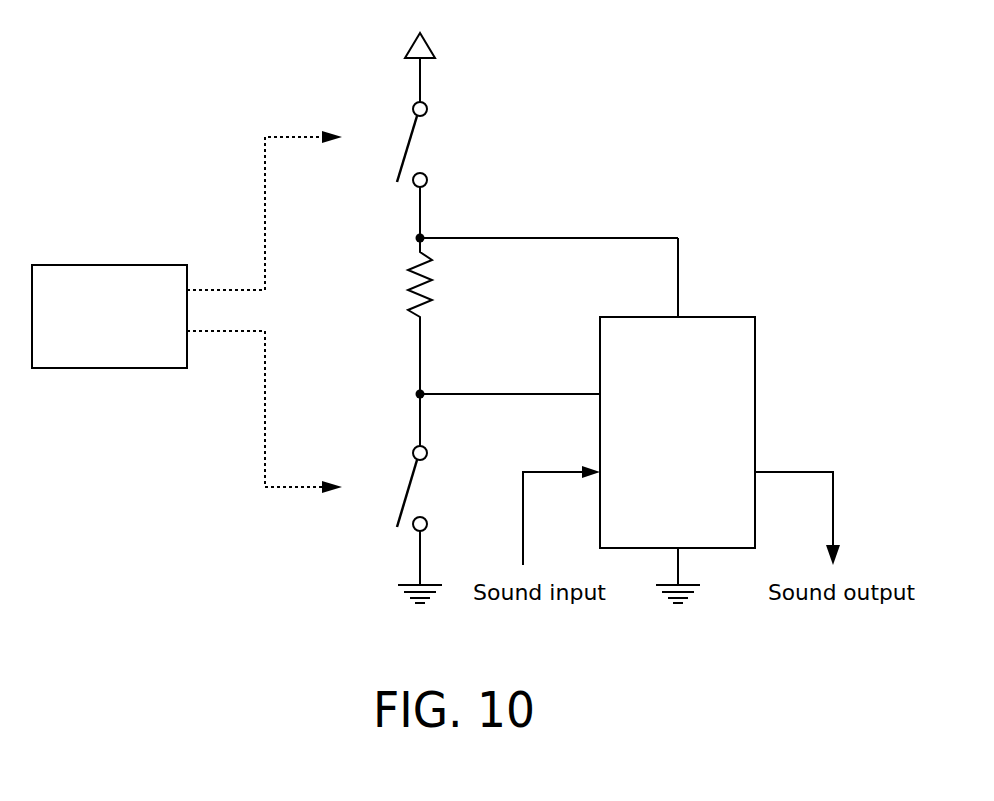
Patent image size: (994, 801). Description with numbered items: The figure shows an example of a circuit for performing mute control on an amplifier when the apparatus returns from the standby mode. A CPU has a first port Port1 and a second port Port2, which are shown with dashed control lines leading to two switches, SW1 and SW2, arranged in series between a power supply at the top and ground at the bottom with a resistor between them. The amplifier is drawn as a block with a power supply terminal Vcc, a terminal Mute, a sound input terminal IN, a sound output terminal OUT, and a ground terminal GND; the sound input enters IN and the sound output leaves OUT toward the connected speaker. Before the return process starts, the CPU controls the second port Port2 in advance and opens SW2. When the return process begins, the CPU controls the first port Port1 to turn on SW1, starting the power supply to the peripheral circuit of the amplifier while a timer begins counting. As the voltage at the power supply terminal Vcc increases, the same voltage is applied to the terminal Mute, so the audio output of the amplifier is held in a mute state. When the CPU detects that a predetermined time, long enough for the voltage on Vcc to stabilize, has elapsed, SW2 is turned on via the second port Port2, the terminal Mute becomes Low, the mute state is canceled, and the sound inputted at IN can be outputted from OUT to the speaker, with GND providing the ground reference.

The switch SW1 is at (437, 144).
The switch SW2 is at (437, 488).
The element CPU is at (187, 312).
The port 1 Port1 is at (230, 218).
The port 2 Port2 is at (230, 411).
The power supply terminal Vcc is at (679, 292).
The terminal Mute is at (537, 394).
The sound input terminal IN is at (580, 513).
The sound output terminal OUT is at (773, 513).
The ground terminal GND is at (678, 561).